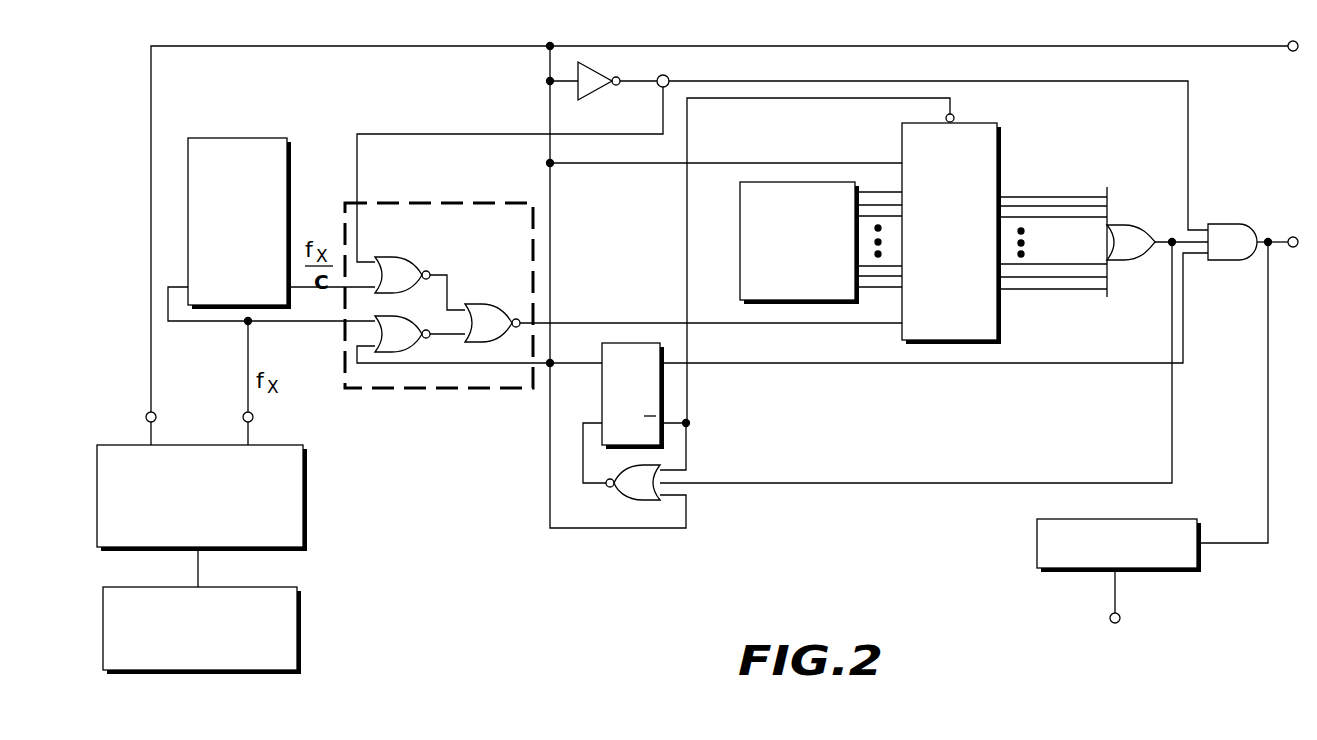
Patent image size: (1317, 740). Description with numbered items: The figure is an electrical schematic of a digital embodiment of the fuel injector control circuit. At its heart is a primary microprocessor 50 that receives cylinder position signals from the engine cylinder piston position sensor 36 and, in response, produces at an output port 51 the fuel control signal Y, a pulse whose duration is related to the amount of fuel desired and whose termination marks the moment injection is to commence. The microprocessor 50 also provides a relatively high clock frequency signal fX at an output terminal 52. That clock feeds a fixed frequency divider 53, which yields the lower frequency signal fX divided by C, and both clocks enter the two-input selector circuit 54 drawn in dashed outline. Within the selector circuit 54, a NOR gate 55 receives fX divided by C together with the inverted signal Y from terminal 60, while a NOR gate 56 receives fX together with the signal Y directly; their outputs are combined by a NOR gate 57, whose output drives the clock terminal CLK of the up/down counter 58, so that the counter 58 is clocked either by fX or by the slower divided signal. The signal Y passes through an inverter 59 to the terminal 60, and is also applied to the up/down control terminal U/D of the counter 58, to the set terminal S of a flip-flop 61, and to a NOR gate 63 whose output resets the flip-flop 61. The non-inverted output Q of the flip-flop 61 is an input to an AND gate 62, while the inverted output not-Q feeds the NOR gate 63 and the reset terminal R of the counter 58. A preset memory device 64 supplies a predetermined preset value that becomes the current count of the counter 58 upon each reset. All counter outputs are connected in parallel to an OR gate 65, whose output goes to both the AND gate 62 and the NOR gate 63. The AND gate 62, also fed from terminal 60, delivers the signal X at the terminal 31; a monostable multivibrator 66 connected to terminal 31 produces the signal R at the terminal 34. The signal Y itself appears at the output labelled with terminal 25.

The output terminal Y 25 is at (1293, 52).
The terminal 31 is at (1293, 236).
The terminal 34 is at (1121, 618).
The engine cylinder piston position sensor 36 is at (300, 636).
The primary microprocessor 50 is at (306, 494).
The output port 51 is at (157, 417).
The output terminal 52 is at (254, 417).
The fixed frequency divider 53 is at (240, 138).
The two-input selector circuit 54 is at (452, 203).
The NOR gate 55 is at (391, 257).
The NOR gate 56 is at (404, 318).
The NOR gate 57 is at (477, 304).
The up/down counter 58 is at (1002, 146).
The inverter 59 is at (600, 92).
The terminal 60 is at (668, 77).
The flip-flop 61 is at (598, 392).
The AND gate 62 is at (1225, 224).
The NOR gate 63 is at (622, 493).
The preset memory device 64 is at (738, 236).
The OR gate 65 is at (1129, 224).
The monostable multivibrator 66 is at (1037, 545).